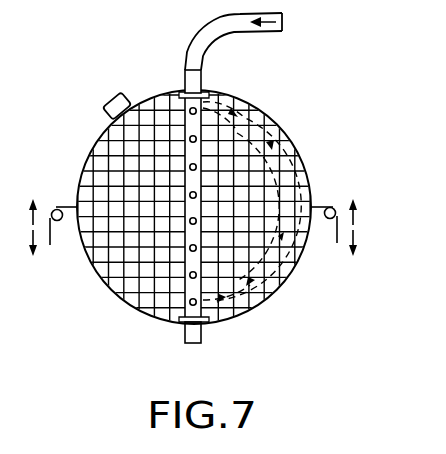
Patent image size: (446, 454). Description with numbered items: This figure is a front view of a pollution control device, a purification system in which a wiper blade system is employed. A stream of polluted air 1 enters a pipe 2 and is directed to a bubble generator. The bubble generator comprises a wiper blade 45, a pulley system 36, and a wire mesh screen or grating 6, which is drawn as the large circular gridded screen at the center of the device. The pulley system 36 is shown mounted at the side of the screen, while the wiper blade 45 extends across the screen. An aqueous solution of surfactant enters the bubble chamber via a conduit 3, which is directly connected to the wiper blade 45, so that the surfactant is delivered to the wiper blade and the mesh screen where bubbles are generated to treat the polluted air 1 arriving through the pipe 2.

The stream of polluted air 1 is at (104, 89).
The pipe 2 is at (136, 88).
The conduit 3 is at (285, 19).
The wire mesh screen or grating 6 is at (124, 310).
The pulley system 36 is at (341, 197).
The wiper blade 45 is at (212, 173).